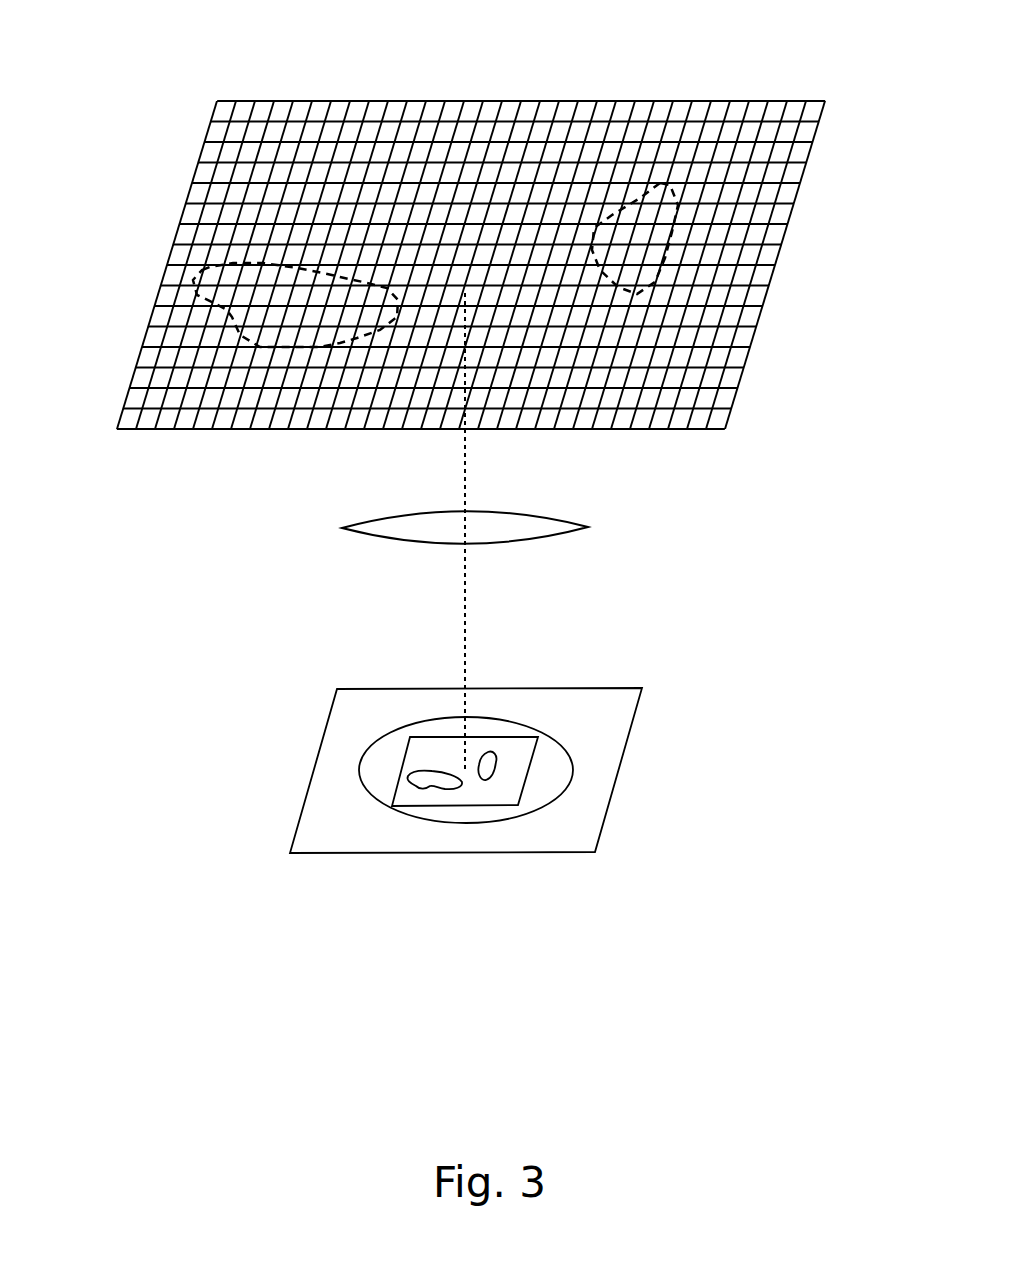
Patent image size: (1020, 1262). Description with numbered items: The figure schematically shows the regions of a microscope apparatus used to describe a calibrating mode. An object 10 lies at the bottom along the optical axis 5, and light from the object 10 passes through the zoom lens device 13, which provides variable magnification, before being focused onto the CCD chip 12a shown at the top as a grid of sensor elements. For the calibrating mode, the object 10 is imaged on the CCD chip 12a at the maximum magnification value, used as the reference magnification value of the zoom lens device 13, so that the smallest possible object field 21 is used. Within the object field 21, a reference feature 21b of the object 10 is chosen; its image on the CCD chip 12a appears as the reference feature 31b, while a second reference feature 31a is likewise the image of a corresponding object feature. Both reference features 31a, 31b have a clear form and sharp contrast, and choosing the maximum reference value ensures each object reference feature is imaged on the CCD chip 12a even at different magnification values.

The CCD chip 12a is at (792, 215).
The reference feature 31a is at (653, 215).
The reference feature 31b is at (232, 278).
The zoom lens device 13 is at (543, 528).
The optical axis 5 is at (463, 617).
The object 10 is at (570, 788).
The object field 21 is at (500, 797).
The reference feature 21b is at (433, 782).